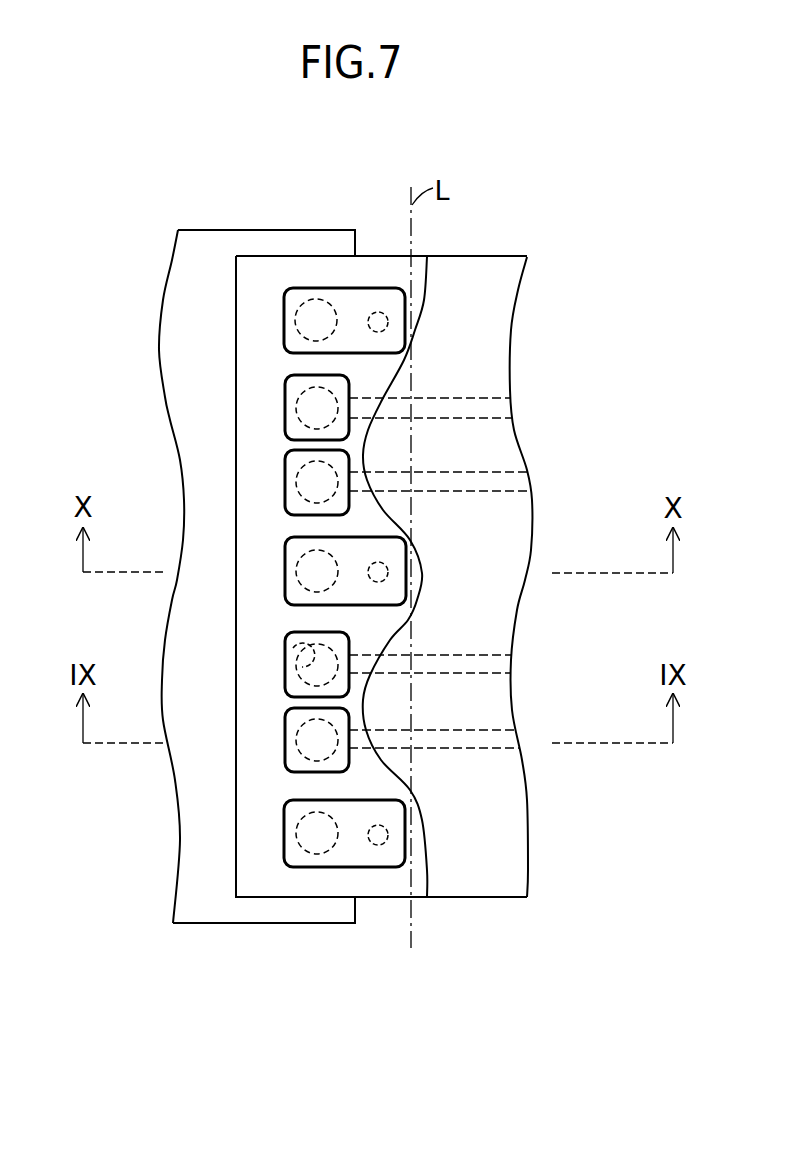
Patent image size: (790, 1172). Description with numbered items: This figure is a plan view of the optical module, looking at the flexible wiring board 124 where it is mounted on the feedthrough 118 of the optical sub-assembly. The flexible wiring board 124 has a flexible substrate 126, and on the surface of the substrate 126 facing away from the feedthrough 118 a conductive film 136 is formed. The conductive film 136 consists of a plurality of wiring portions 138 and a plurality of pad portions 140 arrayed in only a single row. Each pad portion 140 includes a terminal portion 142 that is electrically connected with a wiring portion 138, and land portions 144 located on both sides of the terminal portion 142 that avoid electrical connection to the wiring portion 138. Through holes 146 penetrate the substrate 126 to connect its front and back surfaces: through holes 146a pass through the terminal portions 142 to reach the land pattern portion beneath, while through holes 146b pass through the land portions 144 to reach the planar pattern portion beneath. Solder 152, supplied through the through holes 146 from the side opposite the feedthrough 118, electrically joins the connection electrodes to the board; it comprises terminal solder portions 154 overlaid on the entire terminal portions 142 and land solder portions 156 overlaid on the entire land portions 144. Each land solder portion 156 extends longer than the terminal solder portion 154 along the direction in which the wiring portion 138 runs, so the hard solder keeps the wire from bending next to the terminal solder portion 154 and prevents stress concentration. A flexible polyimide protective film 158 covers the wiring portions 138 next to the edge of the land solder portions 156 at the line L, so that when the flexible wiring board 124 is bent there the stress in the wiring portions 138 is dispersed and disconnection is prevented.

The feedthrough 118 is at (210, 230).
The flexible wiring board 124 is at (567, 333).
The substrate 126 is at (297, 887).
The conductive film 136 is at (472, 637).
The wiring portion 138 is at (467, 673).
The pad portion 140 is at (322, 277).
The terminal portion 142 is at (350, 643).
The land portion 144 is at (377, 604).
The through hole 146 is at (203, 608).
The through hole 146a is at (296, 652).
The through hole 146b is at (293, 590).
The solder 152 is at (276, 496).
The terminal solder portion 154 is at (285, 468).
The land solder portion 156 is at (285, 557).
The protective film 158 is at (475, 885).